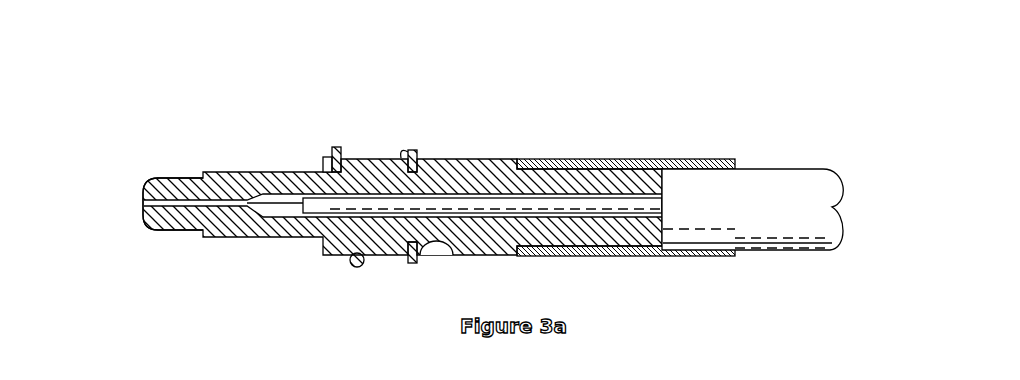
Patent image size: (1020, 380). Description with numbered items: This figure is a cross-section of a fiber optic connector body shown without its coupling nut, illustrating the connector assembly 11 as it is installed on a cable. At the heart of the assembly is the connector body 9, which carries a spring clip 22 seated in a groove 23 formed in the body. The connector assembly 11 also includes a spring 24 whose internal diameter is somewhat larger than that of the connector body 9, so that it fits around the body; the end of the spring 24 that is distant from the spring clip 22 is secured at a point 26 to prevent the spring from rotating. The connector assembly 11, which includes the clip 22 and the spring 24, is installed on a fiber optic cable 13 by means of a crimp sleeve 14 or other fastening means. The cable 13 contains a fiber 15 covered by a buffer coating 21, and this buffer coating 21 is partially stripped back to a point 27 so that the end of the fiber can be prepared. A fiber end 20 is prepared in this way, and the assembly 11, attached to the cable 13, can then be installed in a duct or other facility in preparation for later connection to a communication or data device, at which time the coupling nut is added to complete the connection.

The connector body 9 is at (500, 257).
The connector assembly 11 is at (560, 91).
The fiber optic cable 13 is at (767, 168).
The crimp sleeve 14 is at (627, 258).
The fiber 15 is at (247, 199).
The fiber end 20 is at (144, 203).
The buffer coating 21 is at (540, 205).
The spring clip 22 is at (410, 150).
The groove 23 is at (453, 258).
The spring 24 is at (338, 148).
The point 26 is at (312, 172).
The point 27 is at (303, 216).